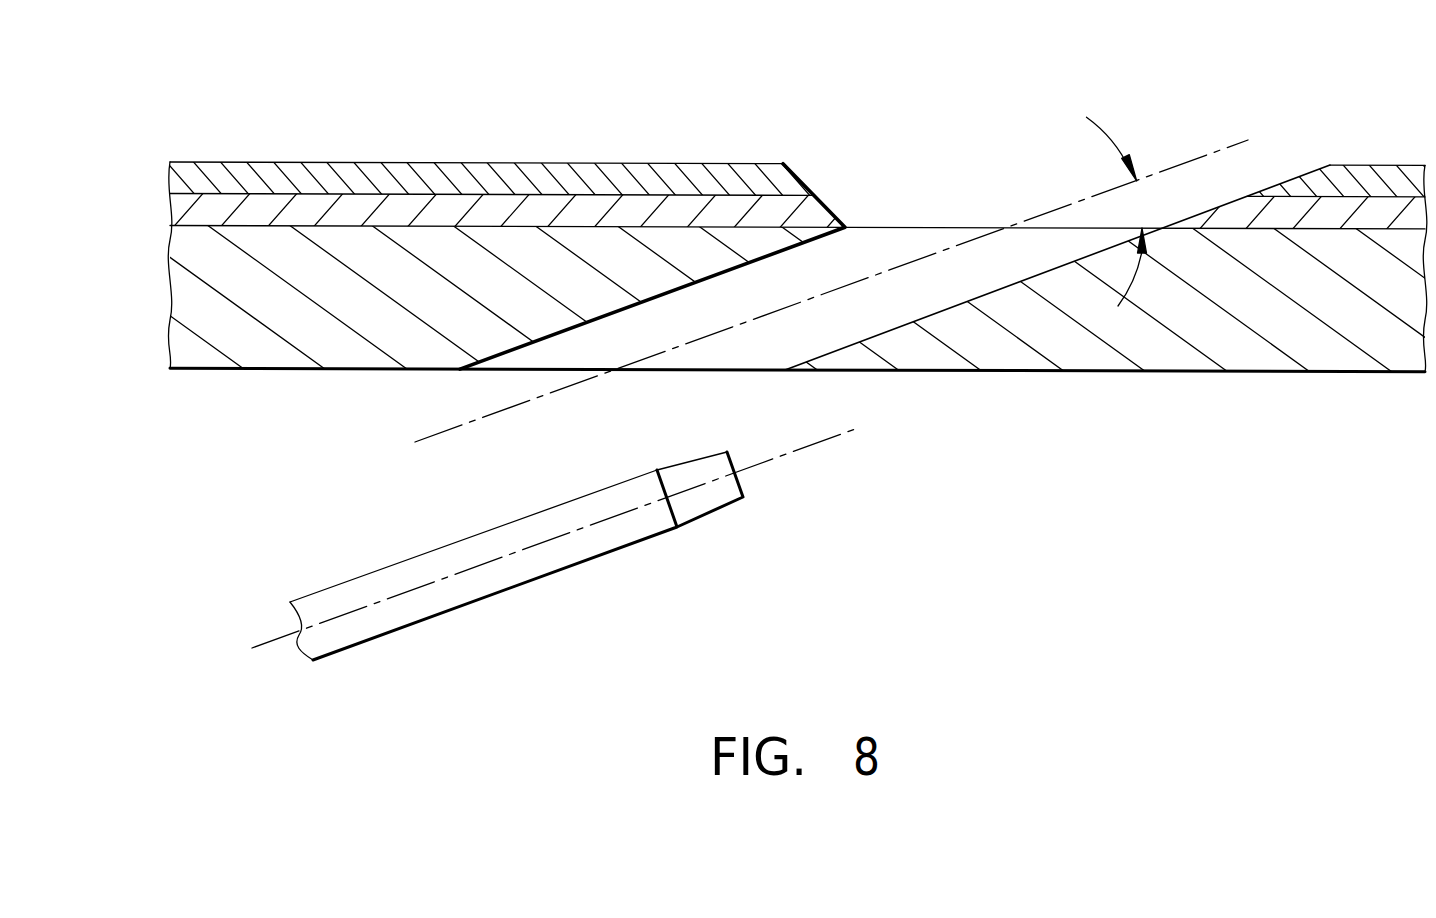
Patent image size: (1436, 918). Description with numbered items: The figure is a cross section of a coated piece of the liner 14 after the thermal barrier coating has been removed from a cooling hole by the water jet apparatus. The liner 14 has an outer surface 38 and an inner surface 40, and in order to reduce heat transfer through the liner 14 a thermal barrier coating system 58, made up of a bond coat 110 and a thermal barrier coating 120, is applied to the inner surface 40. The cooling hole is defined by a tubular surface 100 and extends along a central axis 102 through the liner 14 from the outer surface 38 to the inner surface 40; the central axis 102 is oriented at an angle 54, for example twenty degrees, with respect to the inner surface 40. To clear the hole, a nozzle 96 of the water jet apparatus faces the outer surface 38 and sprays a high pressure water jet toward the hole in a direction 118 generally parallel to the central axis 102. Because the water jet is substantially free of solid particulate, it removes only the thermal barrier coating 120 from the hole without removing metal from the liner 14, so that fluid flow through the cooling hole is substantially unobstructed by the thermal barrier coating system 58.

The liner 14 is at (324, 401).
The outer surface 38 is at (1185, 372).
The inner surface 40 is at (435, 226).
The angle 54 is at (1104, 131).
The thermal barrier coating system 58 is at (243, 135).
The nozzle 96 is at (560, 570).
The tubular surface 100 is at (783, 250).
The central axis 102 is at (1216, 148).
The bond coat 110 is at (502, 194).
The direction 118 is at (792, 453).
The thermal barrier coating 120 is at (625, 163).